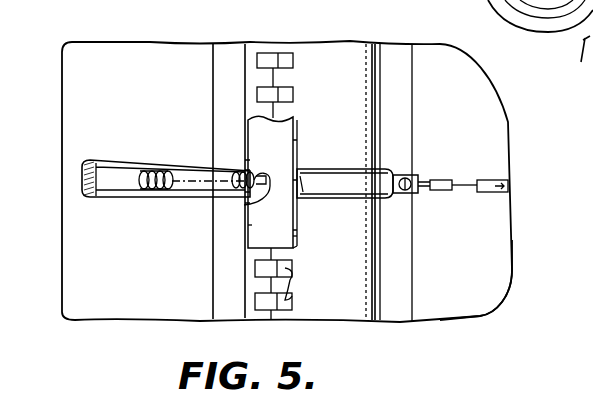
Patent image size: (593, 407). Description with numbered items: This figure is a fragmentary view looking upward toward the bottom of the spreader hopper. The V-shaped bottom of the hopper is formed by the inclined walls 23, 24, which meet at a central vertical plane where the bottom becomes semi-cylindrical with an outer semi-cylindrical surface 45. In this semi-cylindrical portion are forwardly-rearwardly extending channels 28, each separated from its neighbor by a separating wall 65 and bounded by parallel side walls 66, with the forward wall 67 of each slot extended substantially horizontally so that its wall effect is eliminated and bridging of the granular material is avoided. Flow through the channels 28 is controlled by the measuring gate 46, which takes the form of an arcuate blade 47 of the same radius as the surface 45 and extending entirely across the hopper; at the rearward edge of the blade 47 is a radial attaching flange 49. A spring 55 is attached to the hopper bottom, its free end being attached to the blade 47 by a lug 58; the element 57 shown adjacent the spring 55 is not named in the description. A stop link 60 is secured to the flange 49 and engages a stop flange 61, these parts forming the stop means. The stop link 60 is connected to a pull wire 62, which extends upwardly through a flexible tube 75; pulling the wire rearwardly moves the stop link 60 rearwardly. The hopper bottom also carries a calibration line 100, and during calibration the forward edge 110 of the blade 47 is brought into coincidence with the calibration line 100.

The inclined wall 23 is at (75, 91).
The inclined wall 24 is at (484, 294).
The channel 28 is at (271, 312).
The outer semi-cylindrical surface 45 is at (352, 310).
The measuring gate 46 is at (236, 140).
The arcuate blade 47 is at (282, 142).
The radial attaching flange 49 is at (303, 238).
The spring 55 is at (163, 191).
The spring 57 is at (147, 170).
The lug 58 is at (255, 204).
The stop link 60 is at (348, 200).
The stop flange 61 is at (401, 176).
The pull wire 62 is at (411, 196).
The separating wall 65 is at (259, 284).
The side wall 66 is at (292, 270).
The forward wall 67 is at (267, 60).
The flexible tube 75 is at (505, 184).
The calibration line 100 is at (276, 81).
The forward edge 110 is at (246, 228).